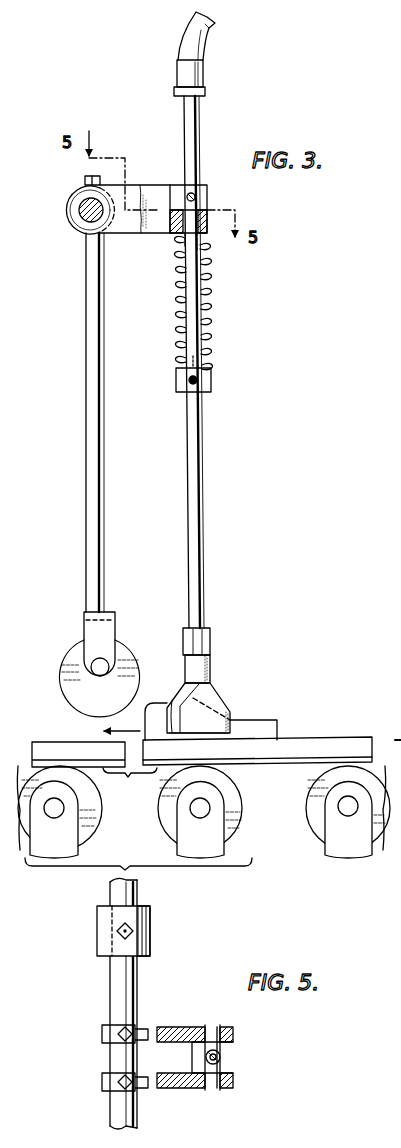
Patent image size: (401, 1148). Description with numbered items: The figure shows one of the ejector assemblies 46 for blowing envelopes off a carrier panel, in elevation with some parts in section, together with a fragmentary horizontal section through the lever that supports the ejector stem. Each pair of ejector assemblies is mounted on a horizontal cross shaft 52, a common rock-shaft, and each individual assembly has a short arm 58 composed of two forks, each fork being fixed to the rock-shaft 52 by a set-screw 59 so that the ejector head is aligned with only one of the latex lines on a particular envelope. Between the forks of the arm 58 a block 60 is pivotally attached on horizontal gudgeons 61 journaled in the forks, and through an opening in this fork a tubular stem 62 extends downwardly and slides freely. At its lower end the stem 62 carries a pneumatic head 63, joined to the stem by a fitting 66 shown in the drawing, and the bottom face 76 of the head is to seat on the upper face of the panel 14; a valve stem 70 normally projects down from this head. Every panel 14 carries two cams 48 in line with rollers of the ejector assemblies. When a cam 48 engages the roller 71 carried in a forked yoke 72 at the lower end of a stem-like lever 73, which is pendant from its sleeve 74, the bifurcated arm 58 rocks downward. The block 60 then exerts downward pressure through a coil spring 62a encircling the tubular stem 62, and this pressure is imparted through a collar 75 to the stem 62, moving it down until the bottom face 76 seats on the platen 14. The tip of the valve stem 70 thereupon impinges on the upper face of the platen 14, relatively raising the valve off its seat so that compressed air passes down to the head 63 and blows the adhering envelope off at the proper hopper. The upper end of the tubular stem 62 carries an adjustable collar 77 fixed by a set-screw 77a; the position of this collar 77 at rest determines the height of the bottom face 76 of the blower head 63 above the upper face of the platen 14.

In FIG. 3, the panel 14 is at (318, 737).
In FIG. 3, the ejector assembly 46 is at (141, 320).
In FIG. 3, the cam 48 is at (255, 728).
In FIG. 3, the cross shaft 52 is at (84, 222).
In FIG. 5, the cross shaft 52 is at (138, 988).
In FIG. 3, the arm 58 is at (163, 228).
In FIG. 5, the arm 58 is at (180, 1089).
In FIG. 3, the set-screw 59 is at (85, 179).
In FIG. 5, the set-screw 59 is at (123, 1076).
In FIG. 5, the block 60 is at (230, 1058).
In FIG. 3, the gudgeon 61 is at (203, 248).
In FIG. 5, the gudgeon 61 is at (214, 1030).
In FIG. 3, the tubular stem 62 is at (197, 119).
In FIG. 5, the tubular stem 62 is at (192, 1057).
In FIG. 3, the coil spring 62a is at (206, 315).
In FIG. 3, the pneumatic head 63 is at (207, 694).
In FIG. 3, the fitting 66 is at (212, 638).
In FIG. 3, the valve stem 70 is at (248, 763).
In FIG. 3, the roller 71 is at (80, 688).
In FIG. 3, the forked yoke 72 is at (108, 632).
In FIG. 3, the stem-like lever 73 is at (92, 520).
In FIG. 3, the sleeve 74 is at (121, 234).
In FIG. 5, the sleeve 74 is at (150, 927).
In FIG. 3, the collar 75 is at (212, 380).
In FIG. 3, the bottom face 76 is at (180, 705).
In FIG. 3, the adjustable collar 77 is at (210, 192).
In FIG. 3, the set-screw 77a is at (189, 194).